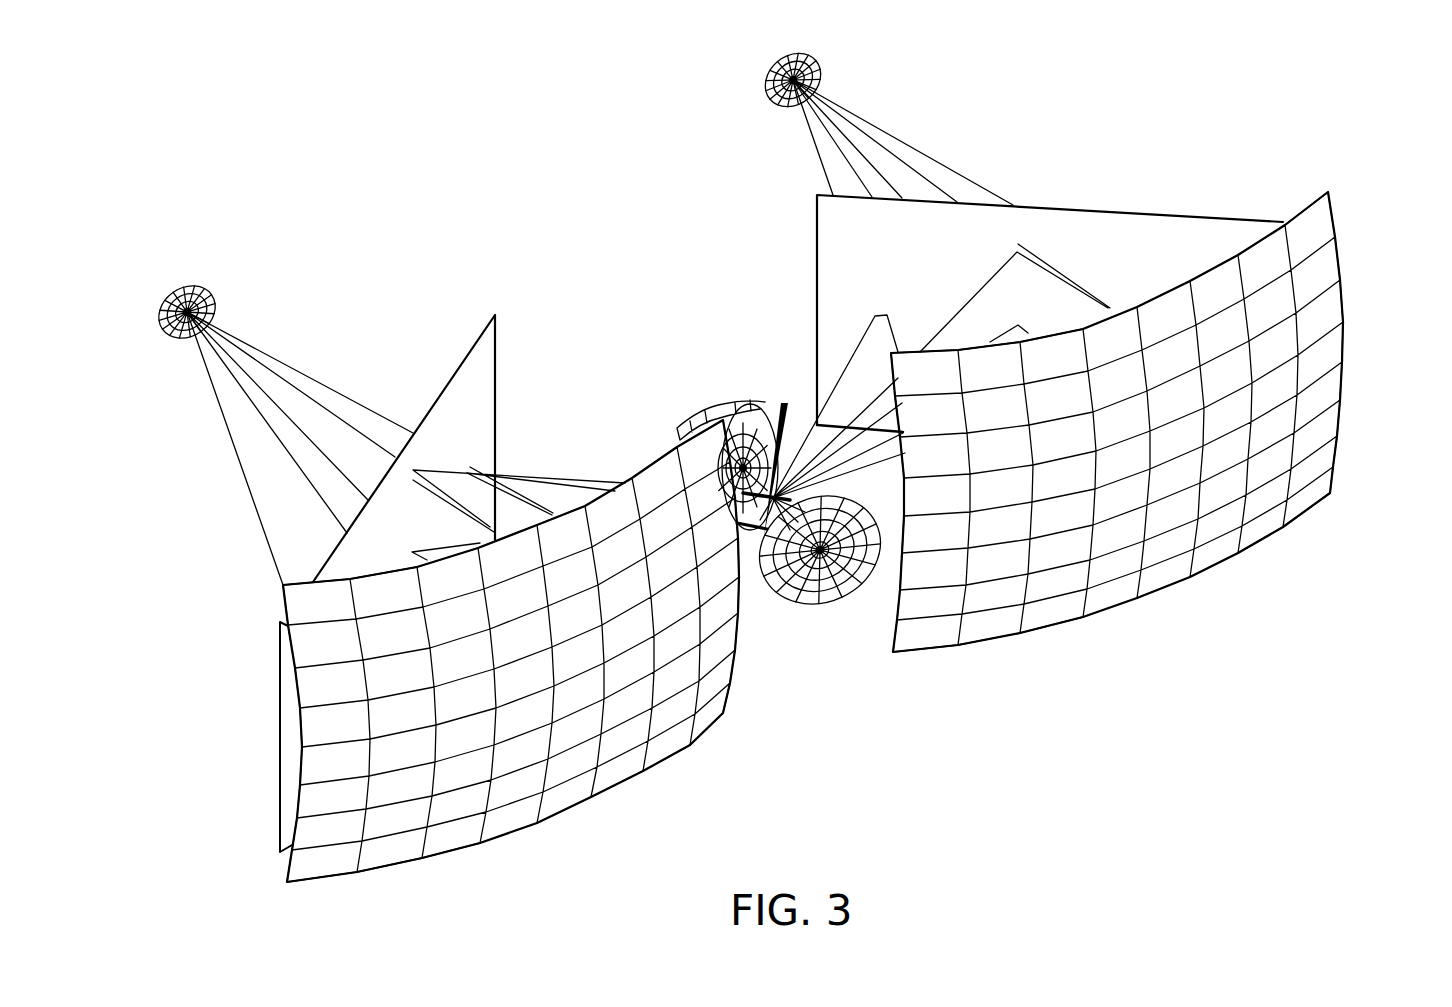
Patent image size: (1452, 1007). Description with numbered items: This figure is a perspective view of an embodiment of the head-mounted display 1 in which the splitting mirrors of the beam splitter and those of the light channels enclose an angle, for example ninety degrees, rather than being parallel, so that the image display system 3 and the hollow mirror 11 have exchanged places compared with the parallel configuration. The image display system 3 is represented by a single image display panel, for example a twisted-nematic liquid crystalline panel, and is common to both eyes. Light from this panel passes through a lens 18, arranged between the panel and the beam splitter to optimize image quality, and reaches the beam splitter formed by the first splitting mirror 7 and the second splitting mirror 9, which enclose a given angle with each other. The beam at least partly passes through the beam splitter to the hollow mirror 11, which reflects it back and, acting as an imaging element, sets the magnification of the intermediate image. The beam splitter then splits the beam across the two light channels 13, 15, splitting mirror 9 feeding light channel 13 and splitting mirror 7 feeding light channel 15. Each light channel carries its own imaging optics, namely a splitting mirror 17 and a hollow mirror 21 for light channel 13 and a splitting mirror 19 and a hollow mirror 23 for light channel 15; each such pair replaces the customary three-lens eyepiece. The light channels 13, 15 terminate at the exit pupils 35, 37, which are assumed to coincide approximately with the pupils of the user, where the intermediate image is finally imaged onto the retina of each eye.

The head-mounted display 1 is at (900, 790).
The image display system 3 is at (680, 428).
The first splitting mirror 7 is at (783, 413).
The second splitting mirror 9 is at (752, 517).
The hollow mirror 11 is at (838, 578).
The light channel 13 is at (222, 640).
The light channel 15 is at (1388, 220).
The splitting mirror 17 is at (465, 385).
The lens 18 is at (743, 408).
The splitting mirror 19 is at (1180, 238).
The hollow mirror 21 is at (565, 797).
The hollow mirror 23 is at (1062, 612).
The exit pupil 35 is at (215, 292).
The exit pupil 37 is at (820, 58).